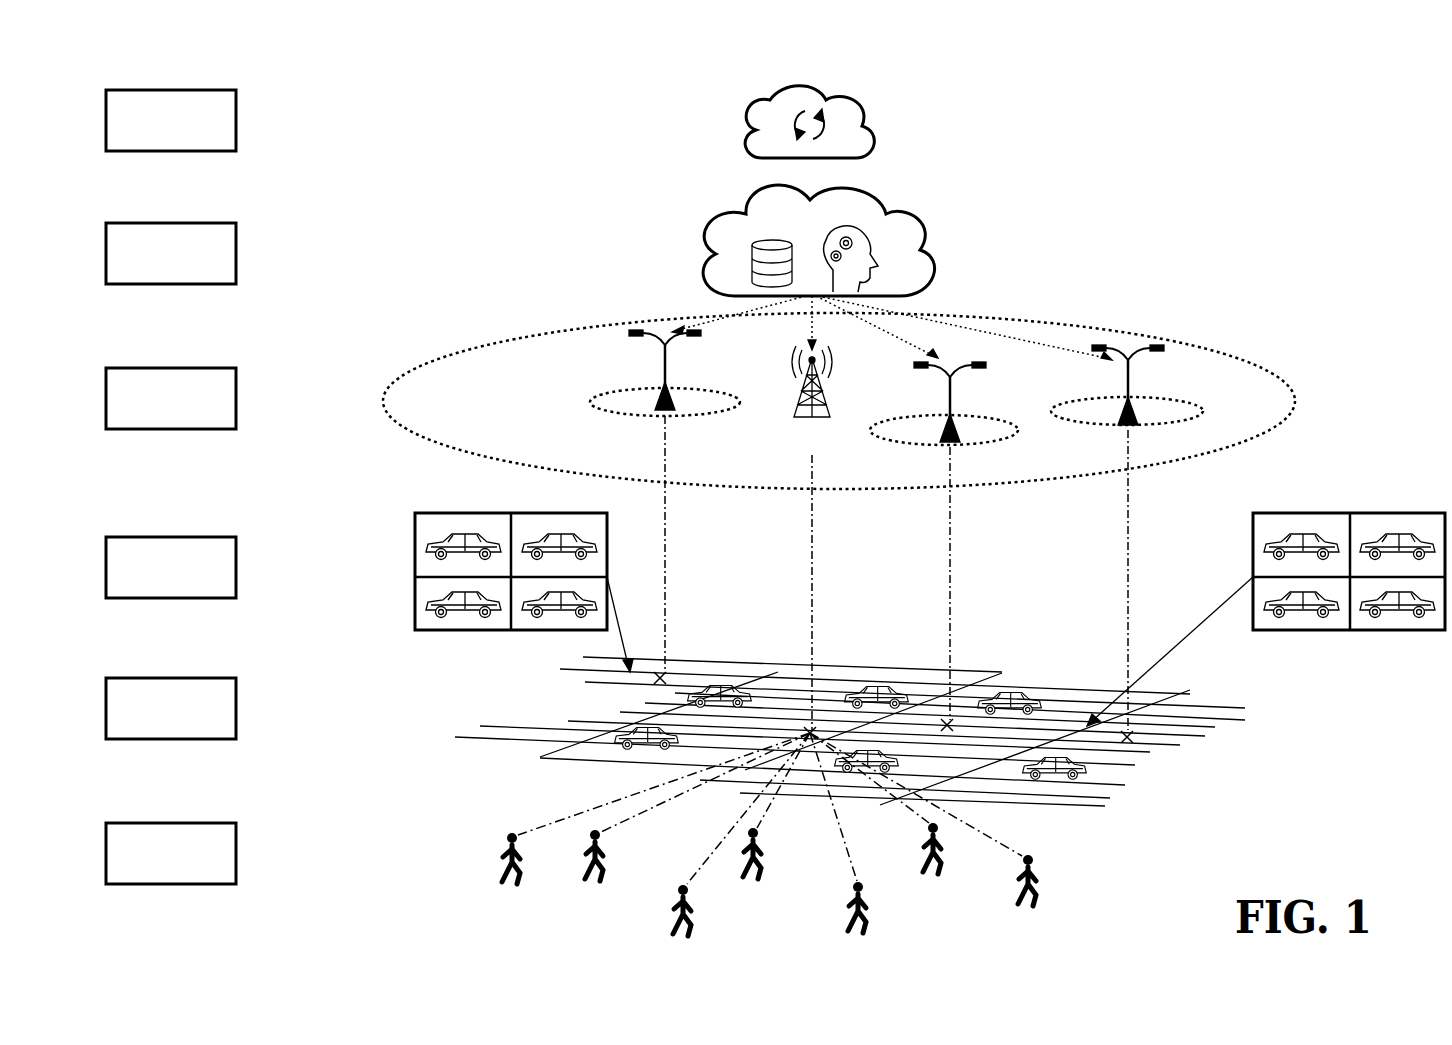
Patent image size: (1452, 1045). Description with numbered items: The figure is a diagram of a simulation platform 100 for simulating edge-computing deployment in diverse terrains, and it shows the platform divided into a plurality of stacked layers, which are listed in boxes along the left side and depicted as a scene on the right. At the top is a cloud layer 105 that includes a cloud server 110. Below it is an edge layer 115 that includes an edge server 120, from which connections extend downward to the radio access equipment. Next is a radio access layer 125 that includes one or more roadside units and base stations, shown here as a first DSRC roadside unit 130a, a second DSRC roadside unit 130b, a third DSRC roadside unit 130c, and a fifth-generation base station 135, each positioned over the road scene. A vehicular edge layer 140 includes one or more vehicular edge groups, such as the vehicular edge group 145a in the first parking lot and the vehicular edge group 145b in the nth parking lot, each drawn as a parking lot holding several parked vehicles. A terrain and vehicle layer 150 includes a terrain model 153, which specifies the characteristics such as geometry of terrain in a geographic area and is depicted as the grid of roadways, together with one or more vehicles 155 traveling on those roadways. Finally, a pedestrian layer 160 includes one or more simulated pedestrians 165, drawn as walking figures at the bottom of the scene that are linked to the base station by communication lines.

The simulation platform 100 is at (986, 74).
The cloud layer 105 is at (236, 108).
The cloud server 110 is at (863, 122).
The edge layer 115 is at (236, 241).
The edge server 120 is at (922, 242).
The radio access layer 125 is at (236, 386).
The DSRC-RSU 1 130a is at (592, 400).
The DSRC-RSU 2 130b is at (1180, 396).
The DSRC-RSU 3 130c is at (1000, 418).
The 5G-BS 135 is at (830, 397).
The vehicular edge layer 140 is at (236, 555).
The vehicular edge group 145a is at (456, 632).
The vehicular edge group 145b is at (1374, 632).
The terrain and vehicle layer 150 is at (236, 696).
The terrain model 153 is at (822, 690).
The vehicles 155 is at (1095, 770).
The pedestrian layer 160 is at (236, 841).
The simulated pedestrians 165 is at (1040, 893).